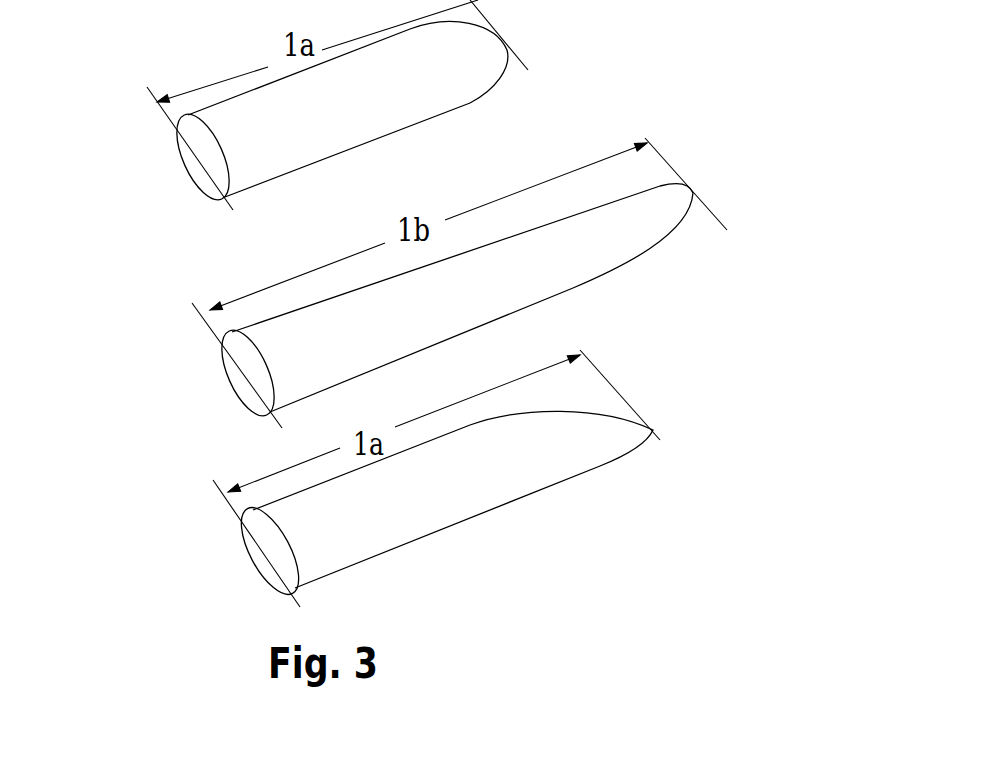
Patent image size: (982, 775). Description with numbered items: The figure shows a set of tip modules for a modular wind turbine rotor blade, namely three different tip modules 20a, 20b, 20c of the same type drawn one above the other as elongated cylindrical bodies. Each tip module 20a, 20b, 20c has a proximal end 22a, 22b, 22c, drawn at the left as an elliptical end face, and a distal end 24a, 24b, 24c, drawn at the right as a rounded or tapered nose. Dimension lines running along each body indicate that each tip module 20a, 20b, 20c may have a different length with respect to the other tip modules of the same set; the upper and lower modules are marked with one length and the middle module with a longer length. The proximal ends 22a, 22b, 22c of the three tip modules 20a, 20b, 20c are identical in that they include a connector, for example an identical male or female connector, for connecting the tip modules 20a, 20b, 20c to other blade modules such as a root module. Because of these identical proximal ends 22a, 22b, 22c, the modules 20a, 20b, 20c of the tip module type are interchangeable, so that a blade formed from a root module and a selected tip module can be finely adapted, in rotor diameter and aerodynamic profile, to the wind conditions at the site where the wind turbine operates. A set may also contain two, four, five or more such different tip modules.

The tip module 20a is at (348, 115).
The proximal end 22a is at (187, 142).
The distal end 24a is at (525, 52).
The tip module 20b is at (461, 303).
The proximal end 22b is at (189, 373).
The distal end 24b is at (697, 195).
The tip module 20c is at (447, 506).
The proximal end 22c is at (244, 540).
The distal end 24c is at (663, 430).